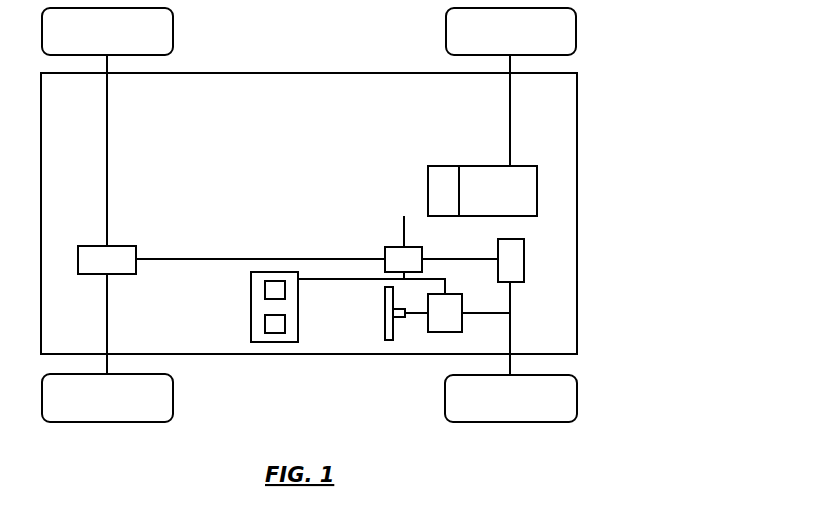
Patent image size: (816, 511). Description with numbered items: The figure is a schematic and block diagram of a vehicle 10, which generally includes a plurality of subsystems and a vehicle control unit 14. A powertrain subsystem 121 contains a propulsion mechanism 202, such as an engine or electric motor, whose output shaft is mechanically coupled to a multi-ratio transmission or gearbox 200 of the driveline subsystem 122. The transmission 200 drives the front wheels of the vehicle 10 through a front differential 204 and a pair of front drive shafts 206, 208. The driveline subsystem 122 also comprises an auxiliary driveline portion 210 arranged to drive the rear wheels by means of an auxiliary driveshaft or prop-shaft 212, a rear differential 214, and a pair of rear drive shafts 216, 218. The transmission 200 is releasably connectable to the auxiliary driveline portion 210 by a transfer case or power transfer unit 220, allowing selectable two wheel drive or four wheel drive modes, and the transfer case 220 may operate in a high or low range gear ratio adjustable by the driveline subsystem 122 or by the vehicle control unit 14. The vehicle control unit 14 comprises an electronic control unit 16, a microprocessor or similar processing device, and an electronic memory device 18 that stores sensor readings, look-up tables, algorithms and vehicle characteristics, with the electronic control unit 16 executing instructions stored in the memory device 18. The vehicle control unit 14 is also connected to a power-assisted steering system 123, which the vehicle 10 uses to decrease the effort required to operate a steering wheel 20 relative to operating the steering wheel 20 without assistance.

The vehicle 10 is at (640, 116).
The powertrain subsystem 121 is at (538, 185).
The driveline subsystem 122 is at (438, 155).
The power-assisted steering system 123 is at (452, 312).
The vehicle control unit 14 is at (250, 299).
The electronic control unit 16 is at (277, 291).
The electronic memory device 18 is at (277, 321).
The steering wheel 20 is at (384, 302).
The multi-ratio transmission 200 is at (428, 175).
The propulsion mechanism 202 is at (498, 191).
The front differential 204 is at (515, 250).
The front drive shaft 206 is at (512, 363).
The front drive shaft 208 is at (511, 87).
The auxiliary driveline portion 210 is at (206, 286).
The auxiliary driveshaft 212 is at (283, 258).
The rear differential 214 is at (87, 255).
The rear drive shaft 216 is at (107, 120).
The rear drive shaft 218 is at (107, 296).
The transfer case 220 is at (412, 258).